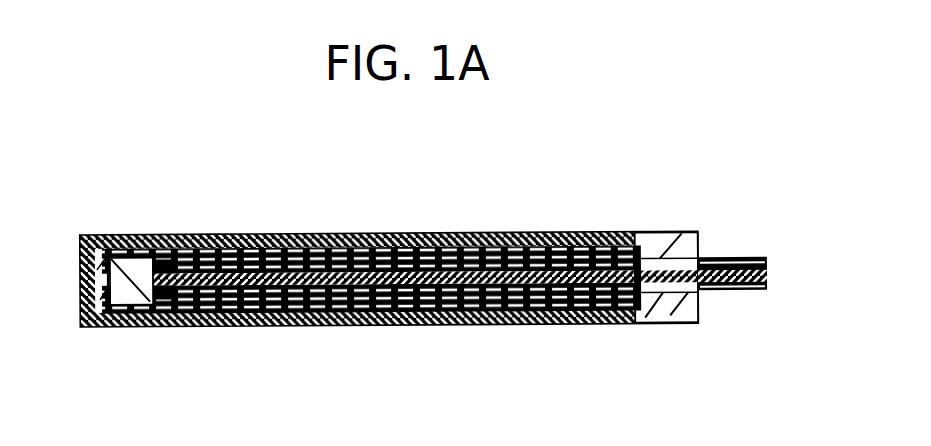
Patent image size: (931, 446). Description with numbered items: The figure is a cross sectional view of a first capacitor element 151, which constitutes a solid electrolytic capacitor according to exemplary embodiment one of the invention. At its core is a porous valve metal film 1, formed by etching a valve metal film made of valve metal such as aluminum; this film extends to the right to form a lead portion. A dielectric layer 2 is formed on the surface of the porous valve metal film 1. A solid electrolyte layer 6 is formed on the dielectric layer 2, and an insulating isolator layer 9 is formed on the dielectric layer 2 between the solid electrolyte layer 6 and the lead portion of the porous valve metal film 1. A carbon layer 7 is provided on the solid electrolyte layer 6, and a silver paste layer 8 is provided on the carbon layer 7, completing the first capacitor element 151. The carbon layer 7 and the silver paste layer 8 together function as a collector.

The first capacitor element 151 is at (646, 166).
The porous valve metal film 1 is at (721, 258).
The dielectric layer 2 is at (216, 305).
The solid electrolyte layer 6 is at (376, 250).
The carbon layer 7 is at (243, 250).
The silver paste layer 8 is at (90, 240).
The insulating isolator layer 9 is at (659, 312).